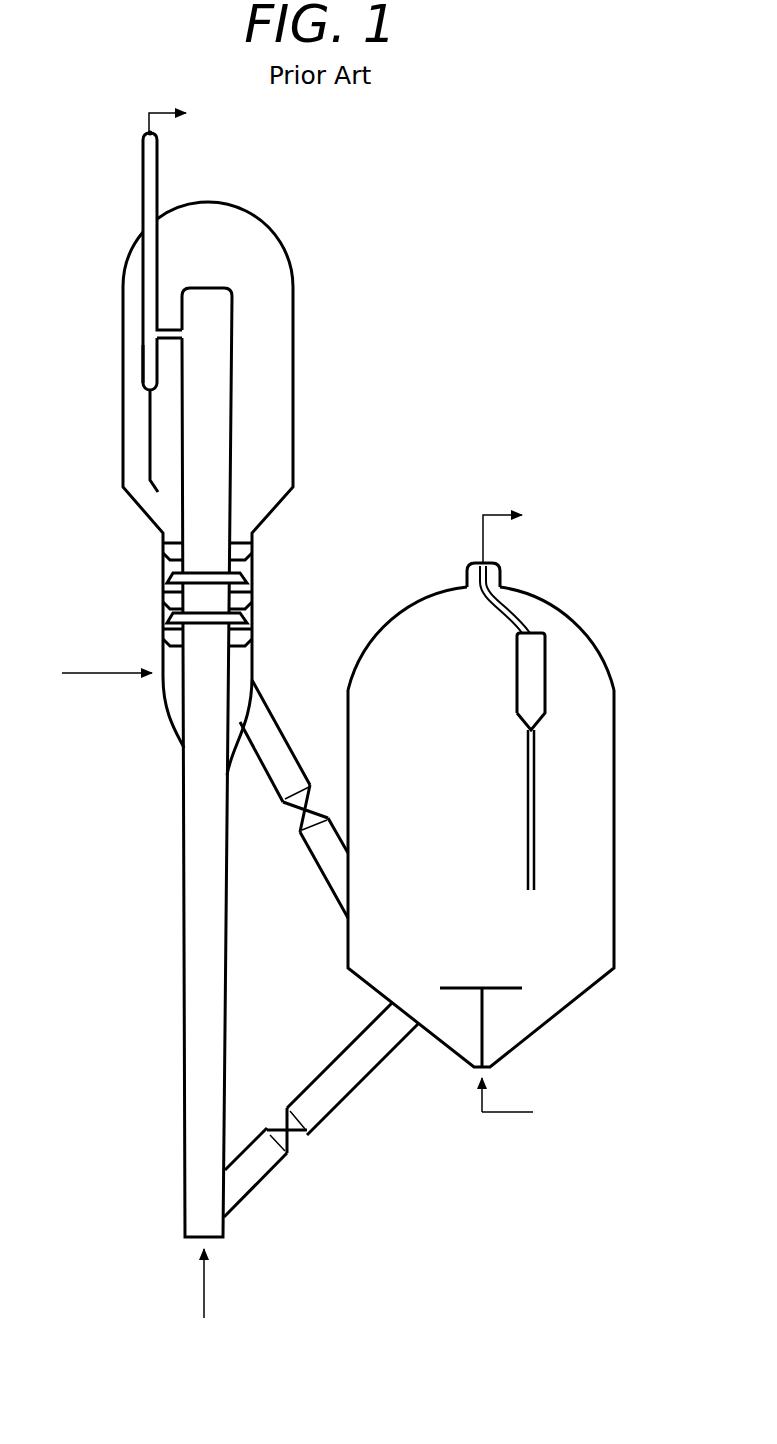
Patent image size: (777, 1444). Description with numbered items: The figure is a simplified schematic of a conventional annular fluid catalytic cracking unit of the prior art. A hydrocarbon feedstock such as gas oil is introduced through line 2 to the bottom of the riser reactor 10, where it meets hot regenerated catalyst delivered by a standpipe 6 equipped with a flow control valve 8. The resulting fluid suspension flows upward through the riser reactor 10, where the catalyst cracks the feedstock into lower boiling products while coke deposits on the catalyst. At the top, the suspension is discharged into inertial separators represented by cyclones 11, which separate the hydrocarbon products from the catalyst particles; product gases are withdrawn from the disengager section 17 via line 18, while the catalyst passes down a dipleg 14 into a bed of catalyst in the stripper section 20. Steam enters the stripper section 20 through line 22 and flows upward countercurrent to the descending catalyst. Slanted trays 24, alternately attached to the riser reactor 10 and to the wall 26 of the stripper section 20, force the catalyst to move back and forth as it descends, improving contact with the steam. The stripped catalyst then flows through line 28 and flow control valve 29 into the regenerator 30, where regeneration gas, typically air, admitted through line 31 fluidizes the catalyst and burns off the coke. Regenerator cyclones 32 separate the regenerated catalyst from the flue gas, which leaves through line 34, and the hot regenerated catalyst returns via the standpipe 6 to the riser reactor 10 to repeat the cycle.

The line 2 is at (204, 1292).
The standpipe 6 is at (367, 1075).
The flow control valve 8 is at (295, 1135).
The riser reactor 10 is at (185, 868).
The cyclones 11 is at (143, 355).
The dipleg 14 is at (150, 458).
The disengager section 17 is at (293, 310).
The line 18 is at (158, 178).
The stripper section 20 is at (152, 590).
The line 22 is at (108, 673).
The trays 24 is at (252, 572).
The wall 26 is at (252, 608).
The line 28 is at (268, 703).
The flow control valve 29 is at (308, 797).
The regenerator 30 is at (438, 793).
The line 31 is at (533, 1112).
The regenerator cyclones 32 is at (545, 675).
The line 34 is at (483, 540).